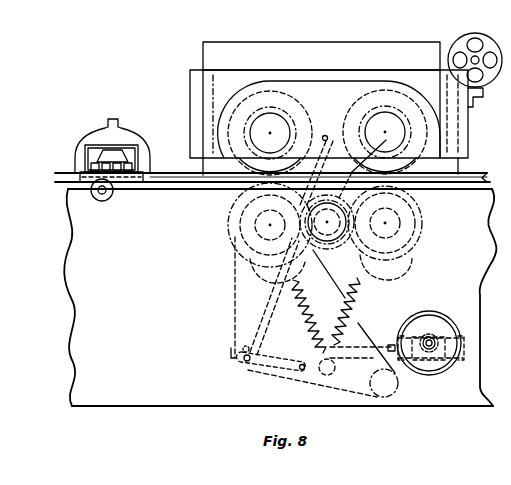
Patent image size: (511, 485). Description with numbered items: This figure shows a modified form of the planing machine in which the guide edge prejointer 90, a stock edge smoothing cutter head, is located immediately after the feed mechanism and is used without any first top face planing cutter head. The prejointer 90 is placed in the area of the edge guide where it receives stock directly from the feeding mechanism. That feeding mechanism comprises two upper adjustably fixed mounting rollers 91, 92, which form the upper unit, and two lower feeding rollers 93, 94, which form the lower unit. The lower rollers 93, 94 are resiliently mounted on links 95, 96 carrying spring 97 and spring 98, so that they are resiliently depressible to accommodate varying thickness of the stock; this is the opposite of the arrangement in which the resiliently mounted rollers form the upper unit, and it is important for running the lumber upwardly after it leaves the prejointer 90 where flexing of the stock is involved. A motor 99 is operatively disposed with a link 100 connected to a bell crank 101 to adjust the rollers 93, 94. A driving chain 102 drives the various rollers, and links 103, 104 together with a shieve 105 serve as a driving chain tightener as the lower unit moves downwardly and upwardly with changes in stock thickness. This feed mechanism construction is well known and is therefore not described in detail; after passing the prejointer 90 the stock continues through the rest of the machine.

The guide edge prejointer 90 is at (128, 152).
The upper adjustably fixed mounting roller 91 is at (266, 80).
The upper adjustably fixed mounting roller 92 is at (385, 90).
The lower feeding roller 93 is at (231, 235).
The lower feeding roller 94 is at (428, 237).
The link 95 is at (245, 306).
The link 96 is at (368, 293).
The spring 97 is at (292, 323).
The spring 98 is at (360, 323).
The motor 99 is at (445, 308).
The link 100 is at (373, 393).
The bell crank 101 is at (333, 377).
The driving chain 102 is at (232, 338).
The link 103 is at (268, 287).
The link 104 is at (262, 370).
The shieve 105 is at (233, 366).